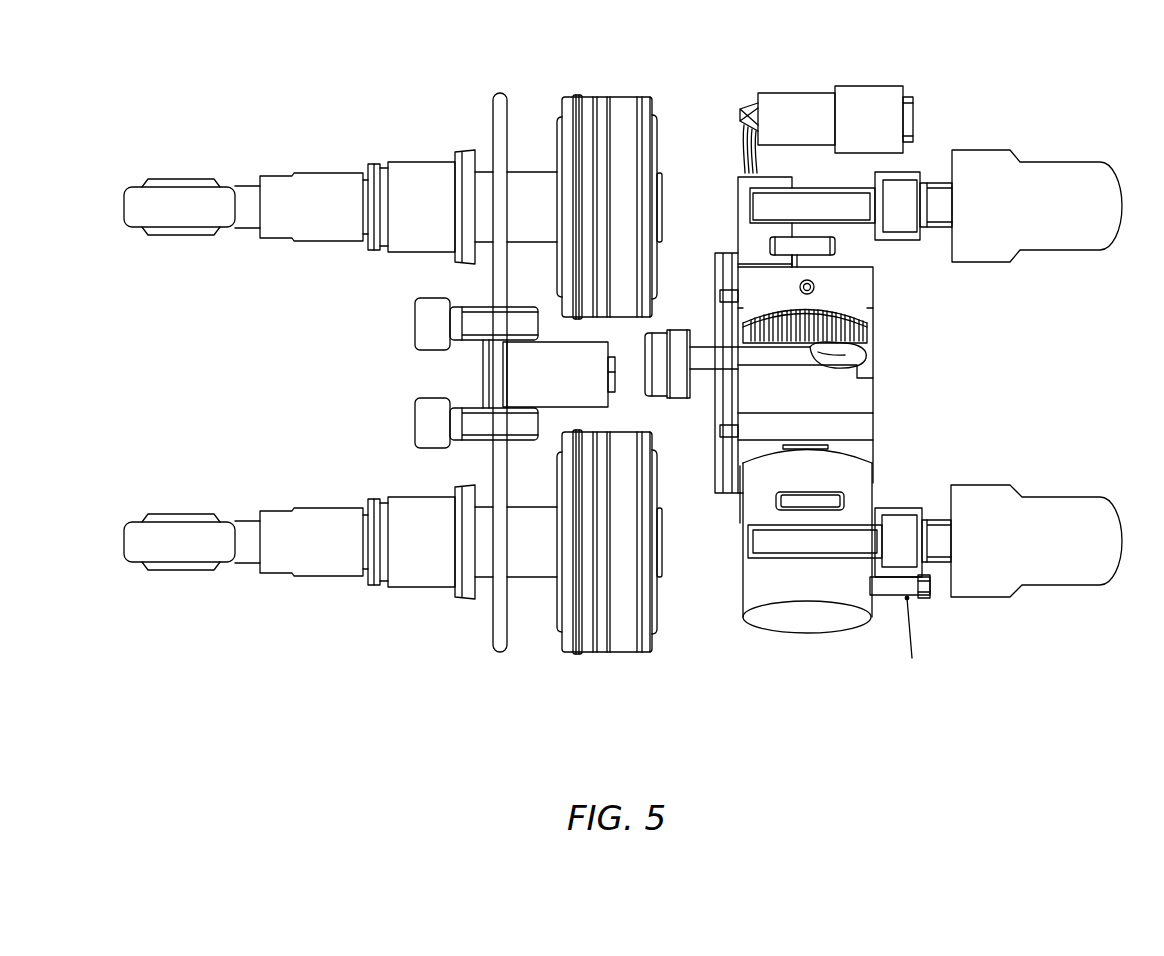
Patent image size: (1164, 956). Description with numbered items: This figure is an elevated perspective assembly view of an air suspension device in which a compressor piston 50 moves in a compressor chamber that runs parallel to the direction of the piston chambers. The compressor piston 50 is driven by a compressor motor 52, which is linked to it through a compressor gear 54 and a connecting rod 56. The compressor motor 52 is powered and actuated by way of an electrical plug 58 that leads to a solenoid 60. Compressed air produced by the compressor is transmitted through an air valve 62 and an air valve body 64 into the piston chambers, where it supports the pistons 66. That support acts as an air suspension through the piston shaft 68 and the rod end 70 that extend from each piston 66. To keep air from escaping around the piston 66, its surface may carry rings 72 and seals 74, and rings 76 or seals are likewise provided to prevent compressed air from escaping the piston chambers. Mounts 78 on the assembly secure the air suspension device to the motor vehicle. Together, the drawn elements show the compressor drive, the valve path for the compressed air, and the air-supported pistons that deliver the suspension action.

The compressor piston 50 is at (658, 385).
The compressor motor 52 is at (807, 618).
The compressor gear 54 is at (850, 347).
The connecting rod 56 is at (737, 357).
The electrical plug 58 is at (907, 115).
The solenoid 60 is at (768, 224).
The air valve 62 is at (610, 372).
The air valve body 64 is at (483, 375).
The piston 66 is at (641, 630).
The piston shaft 68 is at (322, 546).
The rod end 70 is at (208, 546).
The rings 72 is at (609, 182).
The seals 74 is at (577, 97).
The rings 76 is at (493, 122).
The mounts 78 is at (1084, 531).